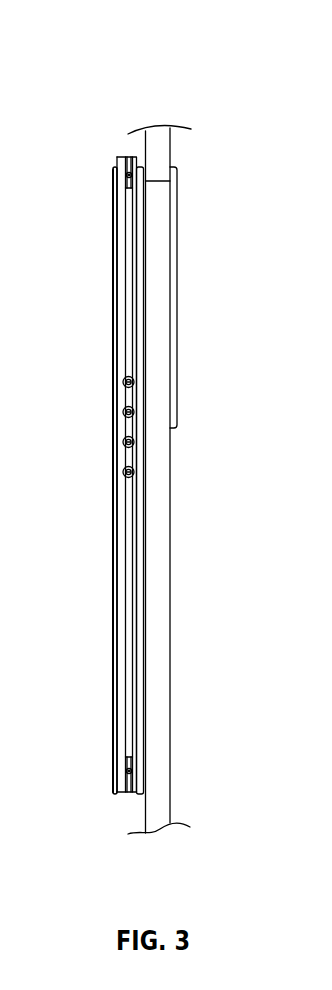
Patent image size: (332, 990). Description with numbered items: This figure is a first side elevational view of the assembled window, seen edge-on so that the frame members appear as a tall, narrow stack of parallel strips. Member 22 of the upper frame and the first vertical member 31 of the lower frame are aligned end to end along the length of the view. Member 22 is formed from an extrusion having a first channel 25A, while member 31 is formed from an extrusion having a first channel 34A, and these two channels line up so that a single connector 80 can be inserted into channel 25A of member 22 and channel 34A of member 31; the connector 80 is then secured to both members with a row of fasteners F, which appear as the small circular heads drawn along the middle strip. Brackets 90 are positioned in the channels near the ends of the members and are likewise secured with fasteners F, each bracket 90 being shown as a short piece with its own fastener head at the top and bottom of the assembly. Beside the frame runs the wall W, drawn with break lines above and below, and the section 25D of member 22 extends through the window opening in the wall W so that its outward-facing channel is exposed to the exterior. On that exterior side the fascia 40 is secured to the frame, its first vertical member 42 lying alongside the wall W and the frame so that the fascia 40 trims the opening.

The member of first frame 22 is at (159, 242).
The first channel 25A is at (126, 227).
The section 25D is at (164, 276).
The first vertical member 31 is at (111, 653).
The first channel 34A is at (129, 581).
The fascia 40 is at (161, 178).
The first vertical member 42 is at (175, 304).
The connector 80 is at (124, 428).
The bracket 90 is at (128, 157).
The fastener F is at (128, 157).
The wall W is at (157, 727).